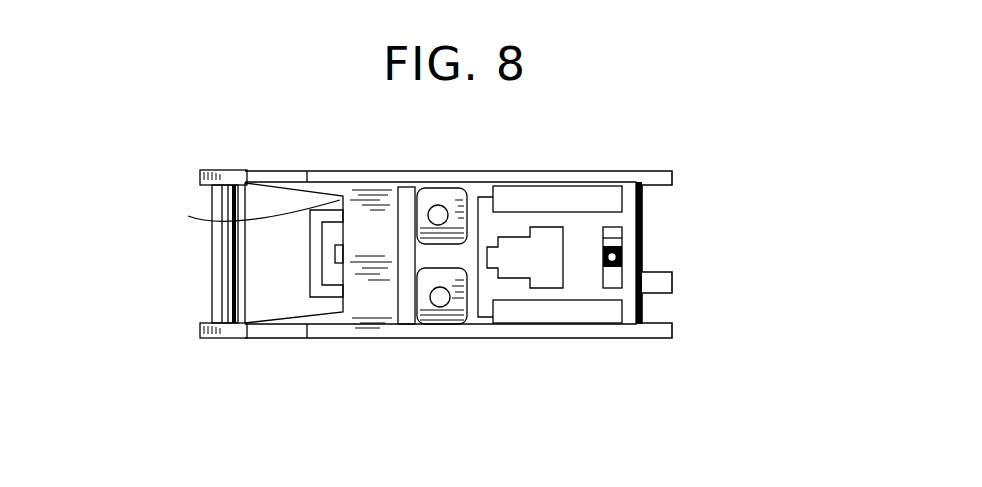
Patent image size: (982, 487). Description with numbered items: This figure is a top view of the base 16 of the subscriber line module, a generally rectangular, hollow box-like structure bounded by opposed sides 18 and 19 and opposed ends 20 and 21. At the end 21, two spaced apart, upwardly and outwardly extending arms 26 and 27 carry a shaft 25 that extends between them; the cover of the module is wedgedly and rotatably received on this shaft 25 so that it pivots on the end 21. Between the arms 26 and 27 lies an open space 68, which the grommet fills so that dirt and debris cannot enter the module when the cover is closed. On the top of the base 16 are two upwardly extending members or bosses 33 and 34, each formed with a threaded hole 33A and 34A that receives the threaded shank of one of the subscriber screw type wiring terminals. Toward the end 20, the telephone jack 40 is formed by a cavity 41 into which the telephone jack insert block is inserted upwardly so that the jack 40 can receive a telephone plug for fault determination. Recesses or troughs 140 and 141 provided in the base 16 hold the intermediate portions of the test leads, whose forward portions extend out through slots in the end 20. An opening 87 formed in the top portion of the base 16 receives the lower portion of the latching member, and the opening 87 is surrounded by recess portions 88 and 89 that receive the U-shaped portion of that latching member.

The base 16 is at (368, 348).
The side 18 is at (528, 340).
The side 19 is at (522, 170).
The end 20 is at (642, 198).
The end 21 is at (250, 214).
The shaft 25 is at (212, 245).
The arm 26 is at (260, 338).
The arm 27 is at (265, 171).
The upwardly extending member or boss 33 is at (450, 325).
The hole 33A is at (434, 306).
The upwardly extending member or boss 34 is at (455, 187).
The hole 34A is at (436, 206).
The telephone jack 40 is at (546, 245).
The cavity 41 is at (528, 265).
The open space 68 is at (296, 270).
The opening 87 is at (608, 260).
The recess portion 88 is at (608, 238).
The recess portion 89 is at (608, 280).
The recess or trough 140 is at (572, 196).
The recess or trough 141 is at (597, 325).